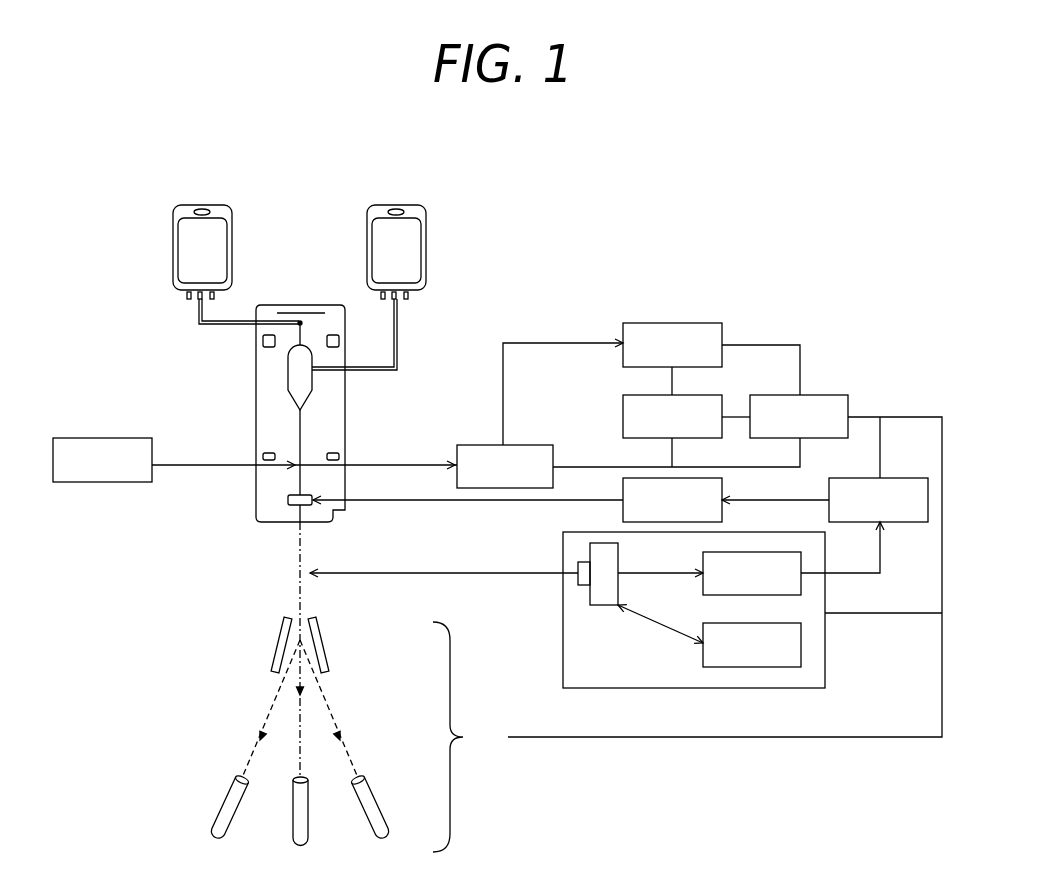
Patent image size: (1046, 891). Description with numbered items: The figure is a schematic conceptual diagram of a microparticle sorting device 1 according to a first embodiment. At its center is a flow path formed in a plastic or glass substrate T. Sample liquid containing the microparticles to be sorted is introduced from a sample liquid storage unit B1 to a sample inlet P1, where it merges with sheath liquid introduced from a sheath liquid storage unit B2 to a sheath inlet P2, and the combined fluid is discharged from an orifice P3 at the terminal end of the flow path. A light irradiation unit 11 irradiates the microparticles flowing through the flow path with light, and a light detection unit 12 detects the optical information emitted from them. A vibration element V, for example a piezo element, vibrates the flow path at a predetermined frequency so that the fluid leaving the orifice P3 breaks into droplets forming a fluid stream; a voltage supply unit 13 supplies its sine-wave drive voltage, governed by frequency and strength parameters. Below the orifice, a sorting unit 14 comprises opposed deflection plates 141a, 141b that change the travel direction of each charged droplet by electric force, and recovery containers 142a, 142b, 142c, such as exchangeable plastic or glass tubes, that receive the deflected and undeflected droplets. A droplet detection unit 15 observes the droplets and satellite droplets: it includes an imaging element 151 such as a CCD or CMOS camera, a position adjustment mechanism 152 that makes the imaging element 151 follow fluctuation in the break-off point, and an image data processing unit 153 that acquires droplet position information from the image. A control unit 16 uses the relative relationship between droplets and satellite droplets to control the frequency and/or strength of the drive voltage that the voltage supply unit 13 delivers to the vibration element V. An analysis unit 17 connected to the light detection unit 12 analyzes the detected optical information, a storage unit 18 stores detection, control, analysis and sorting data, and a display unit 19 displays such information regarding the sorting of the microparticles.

The microparticle sorting device 1 is at (833, 242).
The light irradiation unit 11 is at (255, 460).
The light detection unit 12 is at (628, 413).
The voltage supply unit 13 is at (517, 500).
The sorting unit 14 is at (371, 737).
The droplet detection unit 15 is at (598, 615).
The control unit 16 is at (825, 525).
The analysis unit 17 is at (711, 359).
The storage unit 18 is at (686, 431).
The display unit 19 is at (799, 416).
The imaging element 151 is at (603, 605).
The position adjustment mechanism 152 is at (752, 645).
The image data processing unit 153 is at (752, 573).
The deflection plate 141a is at (322, 645).
The deflection plate 141b is at (278, 640).
The recovery container 142a is at (376, 818).
The recovery container 142b is at (305, 832).
The recovery container 142c is at (224, 812).
The sample liquid storage unit B1 is at (369, 287).
The sheath liquid storage unit B2 is at (236, 264).
The substrate T is at (300, 305).
The vibration element V is at (288, 500).
The sample inlet P1 is at (303, 370).
The sheath inlet P2 is at (300, 323).
The orifice P3 is at (305, 530).